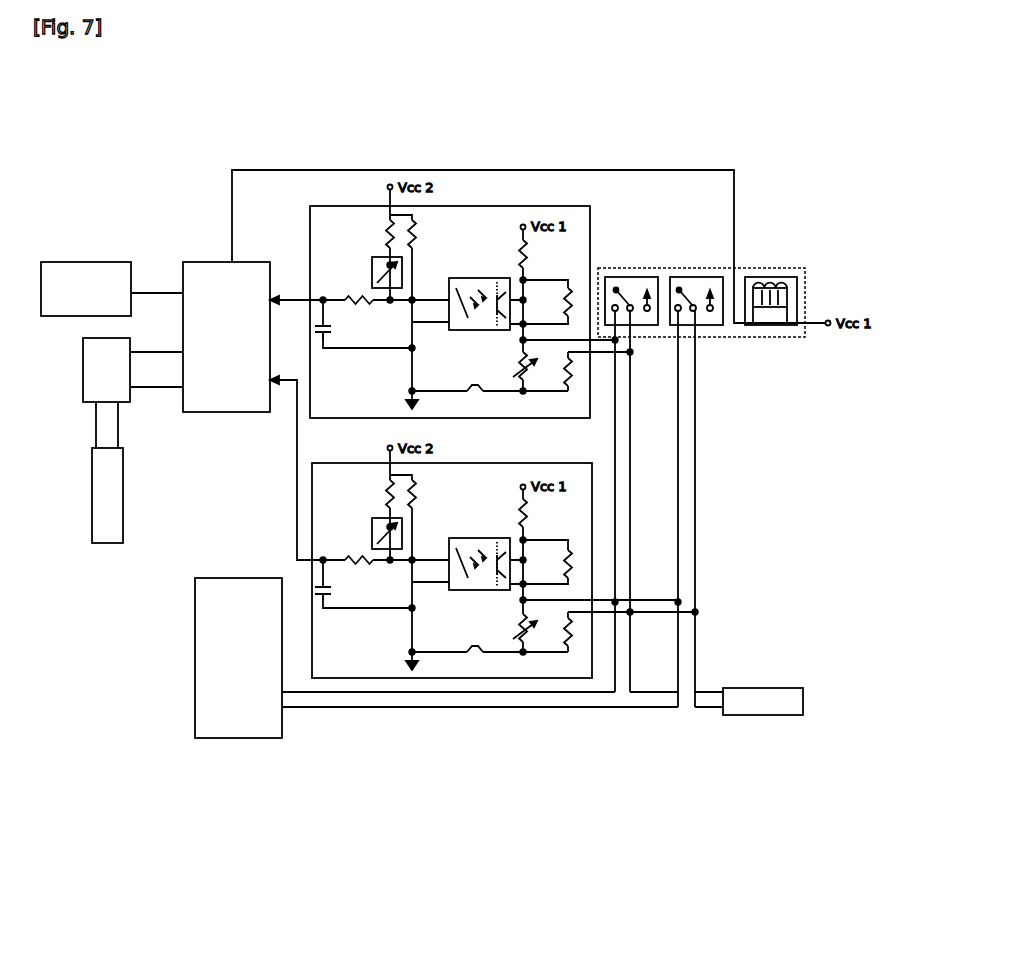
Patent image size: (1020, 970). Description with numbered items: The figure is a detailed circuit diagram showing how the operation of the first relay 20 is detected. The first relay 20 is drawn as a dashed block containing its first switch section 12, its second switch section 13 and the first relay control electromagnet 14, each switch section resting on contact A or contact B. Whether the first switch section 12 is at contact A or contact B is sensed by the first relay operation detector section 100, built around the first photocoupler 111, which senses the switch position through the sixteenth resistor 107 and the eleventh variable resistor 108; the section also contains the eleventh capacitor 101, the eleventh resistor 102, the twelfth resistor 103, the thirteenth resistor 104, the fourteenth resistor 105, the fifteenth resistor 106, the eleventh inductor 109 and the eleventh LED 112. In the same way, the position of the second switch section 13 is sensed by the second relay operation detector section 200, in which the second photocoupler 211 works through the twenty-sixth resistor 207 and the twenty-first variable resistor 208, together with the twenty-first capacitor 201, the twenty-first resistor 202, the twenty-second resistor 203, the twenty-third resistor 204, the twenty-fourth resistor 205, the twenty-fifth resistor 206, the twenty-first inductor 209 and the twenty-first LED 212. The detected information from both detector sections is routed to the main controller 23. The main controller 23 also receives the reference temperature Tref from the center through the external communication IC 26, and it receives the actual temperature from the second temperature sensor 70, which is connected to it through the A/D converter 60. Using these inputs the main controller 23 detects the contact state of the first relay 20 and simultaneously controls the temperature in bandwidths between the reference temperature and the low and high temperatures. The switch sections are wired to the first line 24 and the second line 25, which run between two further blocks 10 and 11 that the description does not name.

The main control board 10 is at (238, 658).
The external device 11 is at (763, 701).
The first switch section of the first relay 12 is at (660, 277).
The second switch section of the first relay 13 is at (723, 277).
The first relay control electromagnet 14 is at (797, 277).
The first relay 20 is at (805, 292).
The main controller 23 is at (226, 337).
The first line 24 is at (708, 716).
The second line 25 is at (708, 690).
The external communication IC 26 is at (86, 289).
The A/D converter 60 is at (106, 370).
The second temperature sensor 70 is at (107, 495).
The first relay operation detector section 100 is at (502, 206).
The eleventh capacitor 101 is at (313, 320).
The eleventh resistor 102 is at (347, 300).
The twelfth resistor 103 is at (383, 245).
The thirteenth resistor 104 is at (390, 206).
The fourteenth resistor 105 is at (526, 258).
The fifteenth resistor 106 is at (575, 283).
The sixteenth resistor 107 is at (537, 360).
The eleventh variable resistor 108 is at (572, 367).
The eleventh inductor 109 is at (483, 392).
The first photocoupler 111 is at (473, 278).
The eleventh LED 112 is at (412, 273).
The second relay operation detector section 200 is at (592, 535).
The twenty-first capacitor 201 is at (321, 595).
The twenty-first resistor 202 is at (360, 562).
The twenty-second resistor 203 is at (382, 483).
The twenty-third resistor 204 is at (413, 478).
The twenty-fourth resistor 205 is at (530, 517).
The twenty-fifth resistor 206 is at (575, 572).
The twenty-sixth resistor 207 is at (571, 644).
The twenty-first variable resistor 208 is at (518, 637).
The twenty-first inductor 209 is at (482, 648).
The second photocoupler 211 is at (497, 592).
The twenty-first LED 212 is at (371, 537).